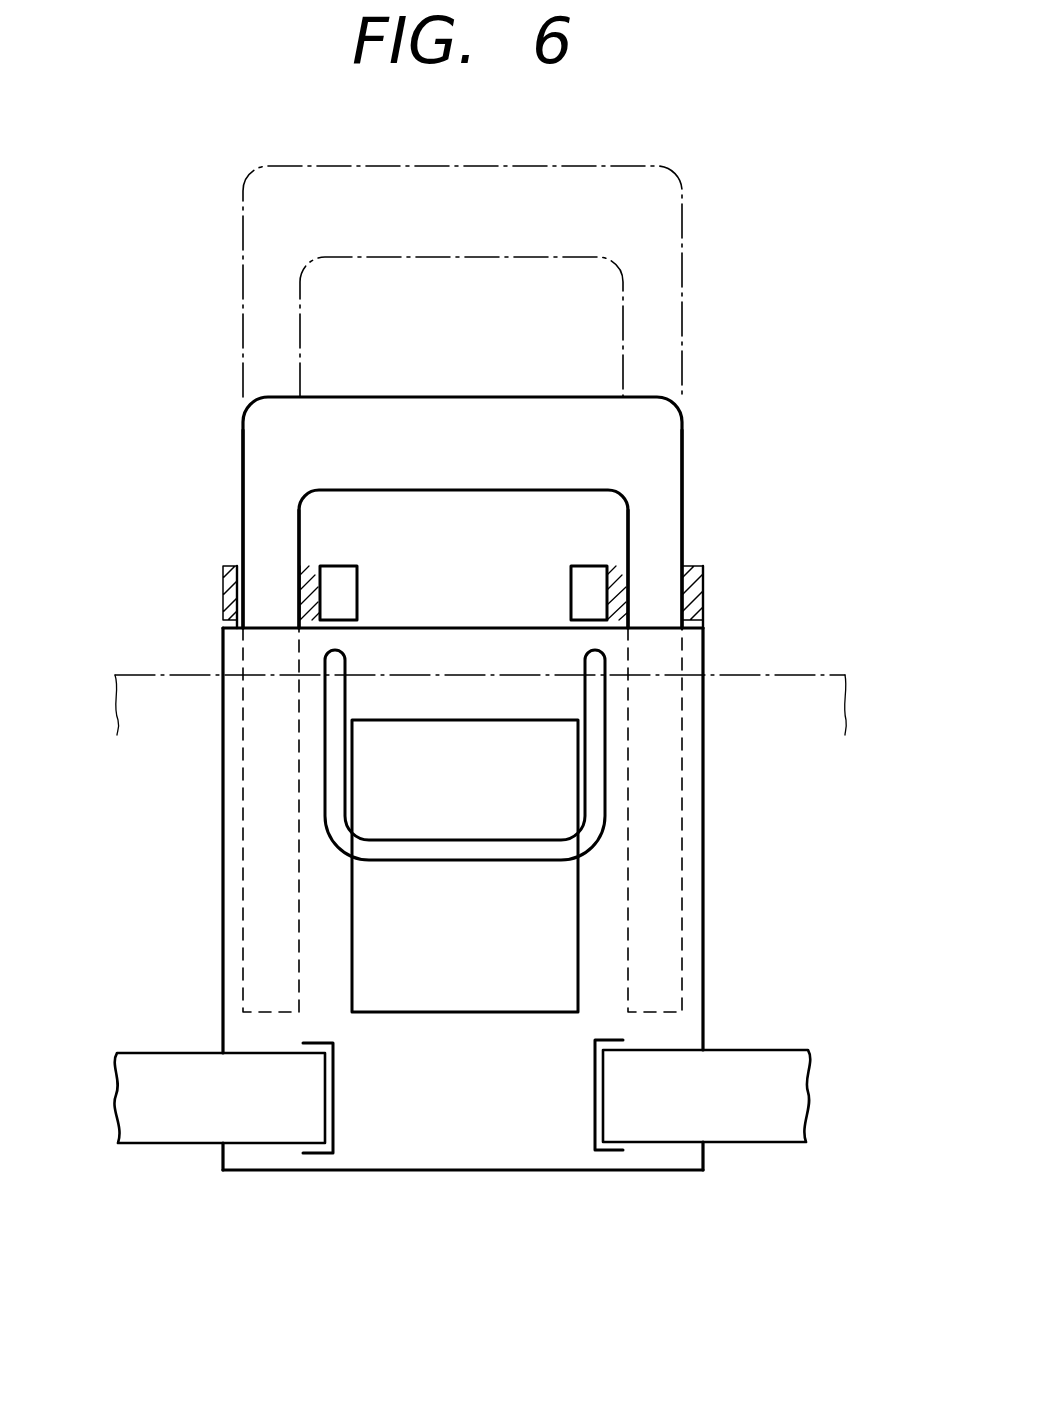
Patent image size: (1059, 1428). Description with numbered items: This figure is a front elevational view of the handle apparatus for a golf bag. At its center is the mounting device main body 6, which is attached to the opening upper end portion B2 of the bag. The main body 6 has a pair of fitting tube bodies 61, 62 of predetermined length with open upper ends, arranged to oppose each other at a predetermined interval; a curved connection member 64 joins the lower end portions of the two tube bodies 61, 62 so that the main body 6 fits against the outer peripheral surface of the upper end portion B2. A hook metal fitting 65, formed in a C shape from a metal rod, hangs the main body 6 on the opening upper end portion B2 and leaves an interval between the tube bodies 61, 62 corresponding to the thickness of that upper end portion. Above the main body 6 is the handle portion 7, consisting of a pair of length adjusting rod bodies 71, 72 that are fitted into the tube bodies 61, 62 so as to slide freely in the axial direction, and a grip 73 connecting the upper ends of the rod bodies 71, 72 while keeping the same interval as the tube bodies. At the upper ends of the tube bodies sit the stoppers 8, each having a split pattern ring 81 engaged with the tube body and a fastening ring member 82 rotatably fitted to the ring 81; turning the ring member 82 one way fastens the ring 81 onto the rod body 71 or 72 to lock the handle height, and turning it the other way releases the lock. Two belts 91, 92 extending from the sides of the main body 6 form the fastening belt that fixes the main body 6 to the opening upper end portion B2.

The mounting device main body 6 is at (462, 953).
The fitting tube body 61 is at (223, 803).
The fitting tube body 62 is at (705, 855).
The connection member 64 is at (478, 1150).
The hook metal fitting 65 is at (452, 850).
The handle portion 7 is at (460, 461).
The length adjusting rod body 71 is at (270, 520).
The length adjusting rod body 72 is at (657, 512).
The grip 73 is at (515, 405).
The stopper 8 is at (322, 555).
The split pattern ring 81 is at (237, 563).
The fastening ring member 82 is at (225, 598).
The belt 91 is at (771, 1122).
The belt 92 is at (172, 1130).
The opening upper end portion B2 is at (815, 668).